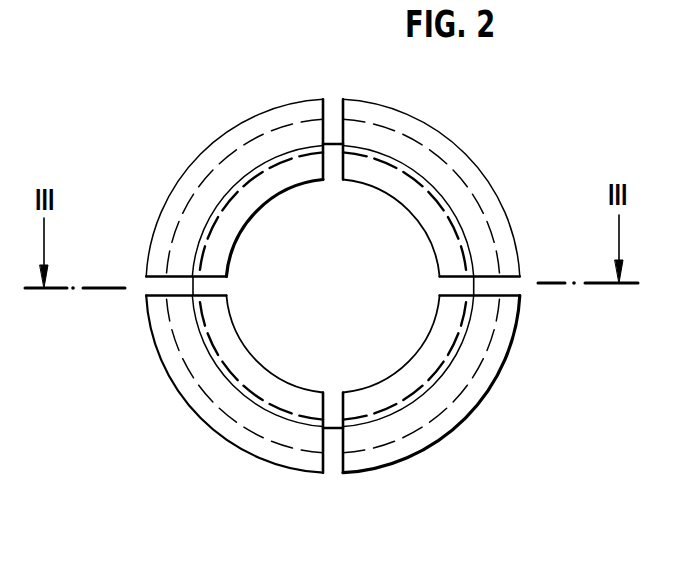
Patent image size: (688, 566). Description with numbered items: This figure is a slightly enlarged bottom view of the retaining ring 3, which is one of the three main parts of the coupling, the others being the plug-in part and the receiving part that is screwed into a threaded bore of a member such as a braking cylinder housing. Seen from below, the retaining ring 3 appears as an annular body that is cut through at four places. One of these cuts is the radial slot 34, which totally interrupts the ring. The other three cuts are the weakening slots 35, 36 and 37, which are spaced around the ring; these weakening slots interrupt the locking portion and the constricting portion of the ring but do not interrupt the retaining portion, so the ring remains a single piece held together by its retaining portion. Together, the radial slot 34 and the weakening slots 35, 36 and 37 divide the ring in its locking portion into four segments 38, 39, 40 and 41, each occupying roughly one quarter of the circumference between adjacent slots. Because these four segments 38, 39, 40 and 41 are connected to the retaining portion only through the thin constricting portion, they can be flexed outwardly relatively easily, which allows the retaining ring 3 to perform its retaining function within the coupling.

The retaining ring 3 is at (477, 162).
The radial slot 34 is at (181, 292).
The weakening slot 35 is at (336, 462).
The weakening slot 36 is at (506, 280).
The weakening slot 37 is at (321, 113).
The segment 38 is at (193, 385).
The segment 39 is at (486, 373).
The segment 40 is at (478, 225).
The segment 41 is at (238, 160).